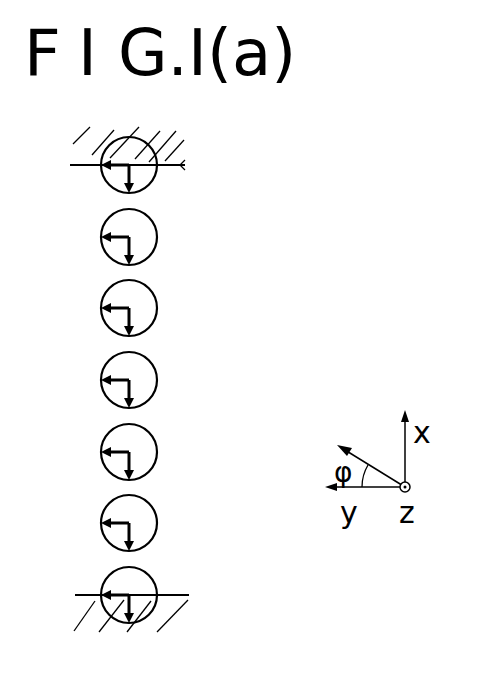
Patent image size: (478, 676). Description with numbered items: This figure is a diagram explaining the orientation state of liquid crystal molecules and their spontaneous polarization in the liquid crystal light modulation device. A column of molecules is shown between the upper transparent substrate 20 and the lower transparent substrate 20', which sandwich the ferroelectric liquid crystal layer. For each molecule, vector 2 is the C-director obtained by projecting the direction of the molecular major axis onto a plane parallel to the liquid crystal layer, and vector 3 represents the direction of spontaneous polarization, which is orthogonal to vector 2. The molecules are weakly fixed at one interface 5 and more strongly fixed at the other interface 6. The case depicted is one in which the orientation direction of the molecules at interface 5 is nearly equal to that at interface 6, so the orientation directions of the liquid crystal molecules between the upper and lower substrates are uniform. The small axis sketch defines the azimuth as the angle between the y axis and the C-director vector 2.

The vector 2 is at (110, 298).
The vector 3 is at (116, 325).
The interface 5 is at (177, 166).
The interface 6 is at (187, 593).
The transparent substrate 20 is at (167, 139).
The transparent substrate 20' is at (169, 622).